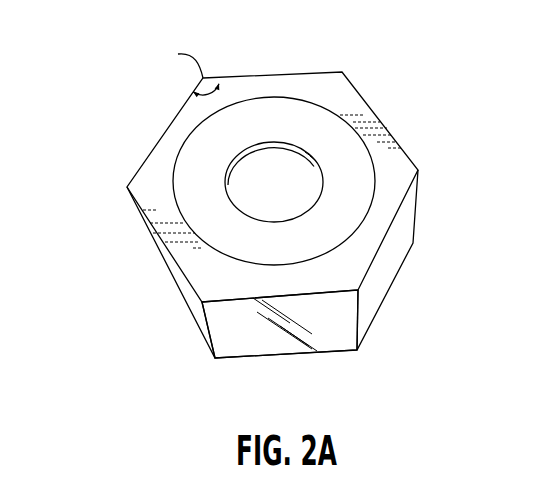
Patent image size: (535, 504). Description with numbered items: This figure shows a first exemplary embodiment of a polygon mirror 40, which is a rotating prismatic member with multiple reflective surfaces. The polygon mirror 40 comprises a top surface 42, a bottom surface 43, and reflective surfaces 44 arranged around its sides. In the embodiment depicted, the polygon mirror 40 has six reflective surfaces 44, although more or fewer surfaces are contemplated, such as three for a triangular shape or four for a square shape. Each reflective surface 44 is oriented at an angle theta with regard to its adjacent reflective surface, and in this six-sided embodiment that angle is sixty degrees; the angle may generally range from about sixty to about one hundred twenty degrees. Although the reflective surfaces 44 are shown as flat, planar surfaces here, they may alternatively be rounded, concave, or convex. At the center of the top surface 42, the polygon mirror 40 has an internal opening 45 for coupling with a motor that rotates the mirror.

The polygon mirror 40 is at (80, 227).
The top surface 42 is at (392, 188).
The bottom surface 43 is at (323, 350).
The reflective surfaces 44 is at (273, 77).
The internal opening 45 is at (278, 177).